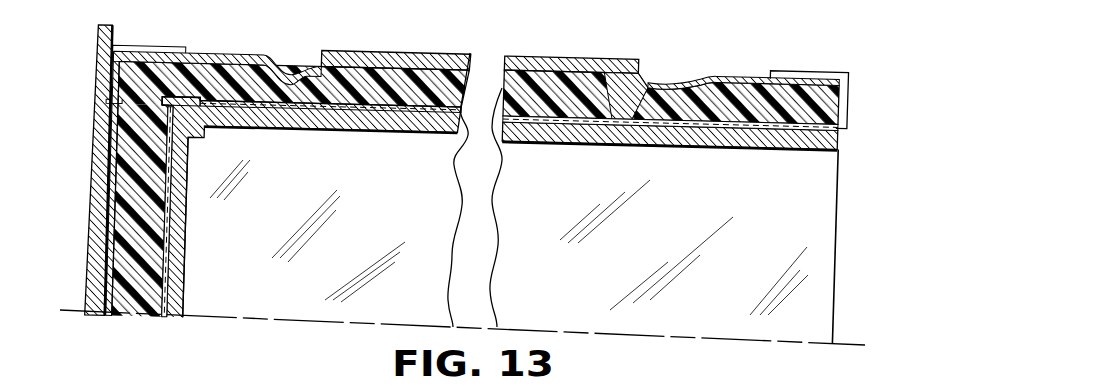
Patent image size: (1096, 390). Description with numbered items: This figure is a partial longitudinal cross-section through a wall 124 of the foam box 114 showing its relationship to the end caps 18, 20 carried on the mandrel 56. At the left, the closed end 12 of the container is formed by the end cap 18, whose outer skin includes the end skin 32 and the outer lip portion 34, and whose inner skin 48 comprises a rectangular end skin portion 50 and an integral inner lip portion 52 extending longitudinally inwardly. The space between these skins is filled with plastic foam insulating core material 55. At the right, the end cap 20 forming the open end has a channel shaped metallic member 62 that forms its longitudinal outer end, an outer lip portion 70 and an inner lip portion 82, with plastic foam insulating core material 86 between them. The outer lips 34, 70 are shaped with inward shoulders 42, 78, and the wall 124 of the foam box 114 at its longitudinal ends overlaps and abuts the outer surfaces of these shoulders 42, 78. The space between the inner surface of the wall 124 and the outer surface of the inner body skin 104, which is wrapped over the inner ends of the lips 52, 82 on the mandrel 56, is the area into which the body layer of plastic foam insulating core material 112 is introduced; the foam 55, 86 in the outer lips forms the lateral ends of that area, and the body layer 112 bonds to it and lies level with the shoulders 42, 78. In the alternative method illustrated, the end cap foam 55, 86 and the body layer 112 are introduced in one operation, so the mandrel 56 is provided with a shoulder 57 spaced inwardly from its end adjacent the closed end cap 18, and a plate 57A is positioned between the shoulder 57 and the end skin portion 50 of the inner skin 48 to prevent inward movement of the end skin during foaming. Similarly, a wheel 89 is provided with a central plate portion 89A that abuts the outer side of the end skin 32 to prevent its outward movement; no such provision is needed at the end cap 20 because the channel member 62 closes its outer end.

The closed end 12 is at (84, 45).
The wheel 89 is at (110, 34).
The end cap 18 is at (165, 40).
The outer lip portion 34 is at (233, 50).
The inward shoulder 42 is at (340, 50).
The foam box 114 is at (416, 48).
The wall 124 is at (528, 58).
The inward shoulder 78 is at (613, 72).
The plastic foam insulating core material 86 is at (687, 97).
The outer lip portion 70 is at (733, 69).
The channel shaped metallic member 62 is at (809, 83).
The end cap 20 is at (874, 80).
The central plate portion 89A is at (100, 180).
The shoulder 57 is at (200, 135).
The mandrel 56 is at (313, 137).
The inner lip portion 52 is at (400, 118).
The inner body skin 104 is at (462, 96).
The inner lip portion 82 is at (568, 126).
The body layer of plastic foam insulating core material 112 is at (497, 103).
The plate 57A is at (188, 212).
The plastic foam insulating core material 55 is at (127, 225).
The end skin 32 is at (110, 272).
The end skin portion 50 is at (168, 270).
The inner skin 48 is at (182, 297).